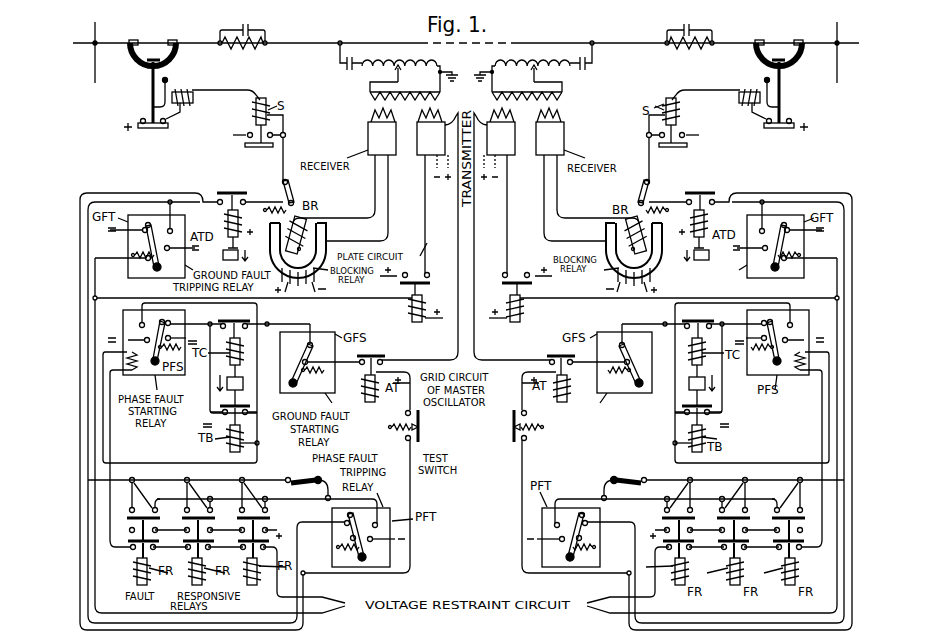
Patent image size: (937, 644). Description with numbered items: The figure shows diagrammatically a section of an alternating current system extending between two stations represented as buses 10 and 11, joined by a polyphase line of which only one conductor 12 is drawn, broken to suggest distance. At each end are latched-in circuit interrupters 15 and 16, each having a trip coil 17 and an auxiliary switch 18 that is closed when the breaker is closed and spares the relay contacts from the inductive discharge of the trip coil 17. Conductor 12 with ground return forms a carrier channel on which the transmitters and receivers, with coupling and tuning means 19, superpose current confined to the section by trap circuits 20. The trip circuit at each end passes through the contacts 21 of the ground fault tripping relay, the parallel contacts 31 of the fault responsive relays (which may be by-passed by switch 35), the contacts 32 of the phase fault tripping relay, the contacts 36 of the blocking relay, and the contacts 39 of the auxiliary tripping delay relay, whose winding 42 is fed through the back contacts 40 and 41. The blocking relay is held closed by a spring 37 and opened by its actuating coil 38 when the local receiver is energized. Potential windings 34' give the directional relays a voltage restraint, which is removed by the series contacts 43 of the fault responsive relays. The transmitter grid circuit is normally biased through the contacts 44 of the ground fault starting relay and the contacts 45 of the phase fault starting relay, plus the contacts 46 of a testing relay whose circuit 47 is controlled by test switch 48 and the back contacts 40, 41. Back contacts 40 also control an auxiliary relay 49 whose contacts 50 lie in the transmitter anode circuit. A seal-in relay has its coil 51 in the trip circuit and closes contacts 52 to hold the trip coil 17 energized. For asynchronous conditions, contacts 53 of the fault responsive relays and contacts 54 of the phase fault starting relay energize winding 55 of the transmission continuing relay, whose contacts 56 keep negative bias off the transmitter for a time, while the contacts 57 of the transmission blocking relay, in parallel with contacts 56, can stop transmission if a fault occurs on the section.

The bus 10 is at (100, 65).
The bus 11 is at (835, 63).
The line conductor 12 is at (342, 37).
The circuit interrupter 15 is at (171, 53).
The circuit interrupter 16 is at (758, 53).
The trip coil 17 is at (187, 92).
The auxiliary switch 18 is at (153, 129).
The coupling and tuning means 19 is at (428, 85).
The trap circuit 20 is at (268, 37).
The contacts of ground fault tripping relay 21 is at (169, 229).
The contacts of fault responsive relays 31 is at (148, 503).
The contacts of phase fault tripping relay 32 is at (362, 521).
The potential windings 34' is at (477, 371).
The switch 35 is at (303, 480).
The contacts of blocking relay 36 is at (282, 192).
The spring 37 is at (250, 222).
The actuating coil 38 is at (276, 262).
The contacts of auxiliary tripping delay relay 39 is at (218, 205).
The back contacts of ground fault tripping relay 40 is at (146, 257).
The back contacts of phase fault tripping relay 41 is at (351, 537).
The energizing winding 42 is at (239, 223).
The contacts of fault responsive relays 43 is at (132, 549).
The contacts of ground fault starting relay 44 is at (312, 347).
The contacts of phase fault starting relay 45 is at (171, 337).
The contacts of testing relay 46 is at (362, 364).
The energizing circuit 47 is at (364, 393).
The test switch 48 is at (420, 421).
The auxiliary relay 49 is at (411, 306).
The contacts of auxiliary relay 50 is at (426, 273).
The coil of seal-in relay 51 is at (255, 103).
The contacts of seal-in relay 52 is at (248, 133).
The contacts of fault responsive relays 53 is at (170, 525).
The contacts of phase fault starting relay 54 is at (139, 326).
The winding of transmission continuing relay 55 is at (241, 349).
The contacts of transmission continuing relay 56 is at (247, 322).
The contacts of transmission blocking relay 57 is at (222, 411).